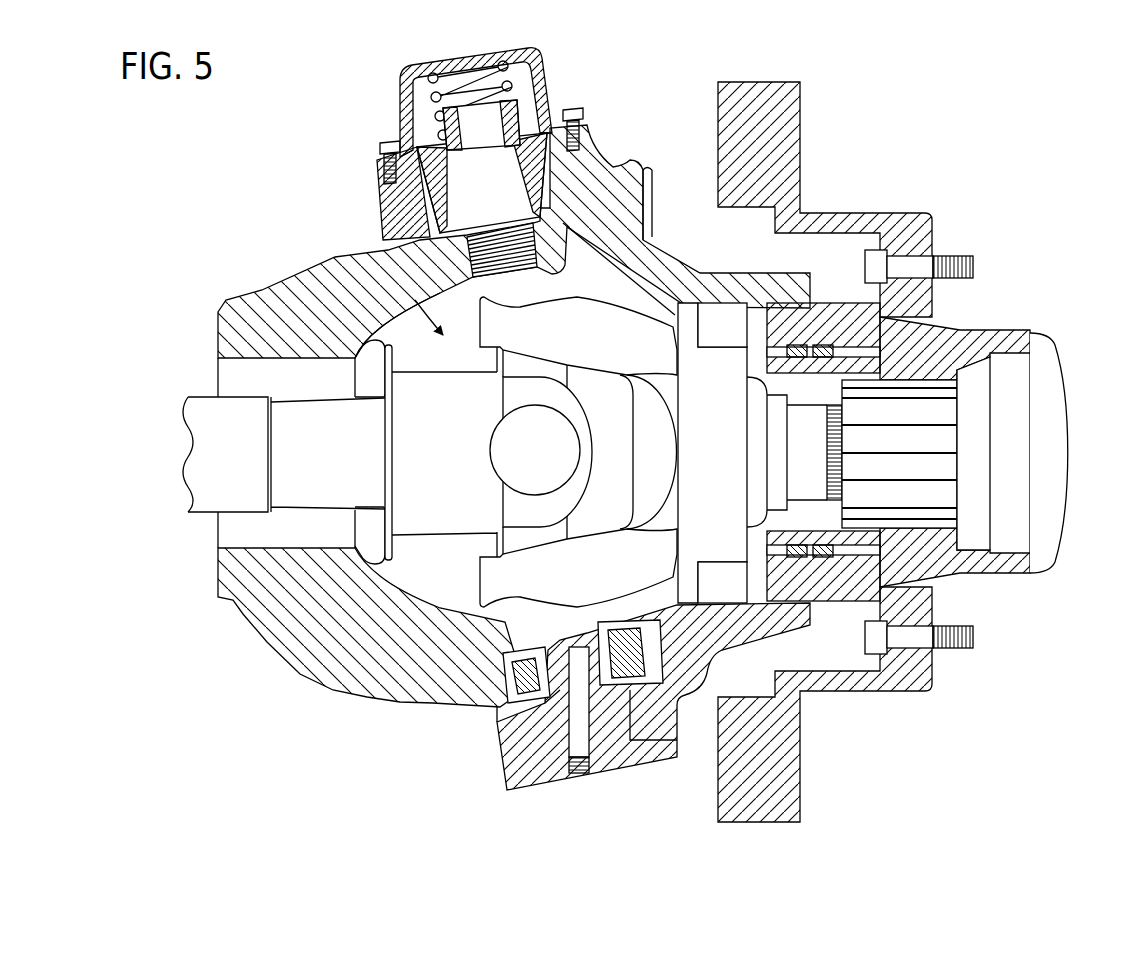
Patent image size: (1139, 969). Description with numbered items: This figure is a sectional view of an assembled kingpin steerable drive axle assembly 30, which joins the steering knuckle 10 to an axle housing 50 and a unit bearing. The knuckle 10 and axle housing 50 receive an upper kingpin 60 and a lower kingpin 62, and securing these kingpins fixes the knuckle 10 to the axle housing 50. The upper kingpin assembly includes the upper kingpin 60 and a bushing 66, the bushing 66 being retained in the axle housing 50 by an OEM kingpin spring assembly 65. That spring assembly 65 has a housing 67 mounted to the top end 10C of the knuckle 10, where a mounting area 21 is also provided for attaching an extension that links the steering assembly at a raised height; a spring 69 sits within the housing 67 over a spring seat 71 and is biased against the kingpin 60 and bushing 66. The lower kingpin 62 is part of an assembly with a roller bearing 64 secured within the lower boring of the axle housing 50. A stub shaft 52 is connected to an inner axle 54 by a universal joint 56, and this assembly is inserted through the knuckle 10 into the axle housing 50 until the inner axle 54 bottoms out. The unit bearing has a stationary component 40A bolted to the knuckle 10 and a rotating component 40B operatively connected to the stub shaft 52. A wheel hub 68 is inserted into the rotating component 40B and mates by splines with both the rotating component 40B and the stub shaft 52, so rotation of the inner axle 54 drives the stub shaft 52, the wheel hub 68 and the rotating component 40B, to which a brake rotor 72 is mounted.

The steering knuckle 10 is at (641, 153).
The top end 10C is at (590, 133).
The mounting area 21 is at (377, 160).
The kingpin steerable drive axle assembly 30 is at (907, 444).
The stationary component 40A is at (857, 572).
The rotating component 40B is at (995, 328).
The axle housing 50 is at (320, 708).
The stub shaft 52 is at (805, 450).
The inner axle 54 is at (293, 413).
The universal joint 56 is at (363, 270).
The upper kingpin 60 is at (505, 193).
The lower kingpin 62 is at (557, 775).
The roller bearing 64 is at (512, 665).
The OEM kingpin spring assembly 65 is at (552, 66).
The bushing 66 is at (441, 178).
The housing 67 is at (400, 78).
The wheel hub 68 is at (1053, 423).
The spring 69 is at (477, 90).
The spring seat 71 is at (443, 127).
The brake rotor 72 is at (800, 110).